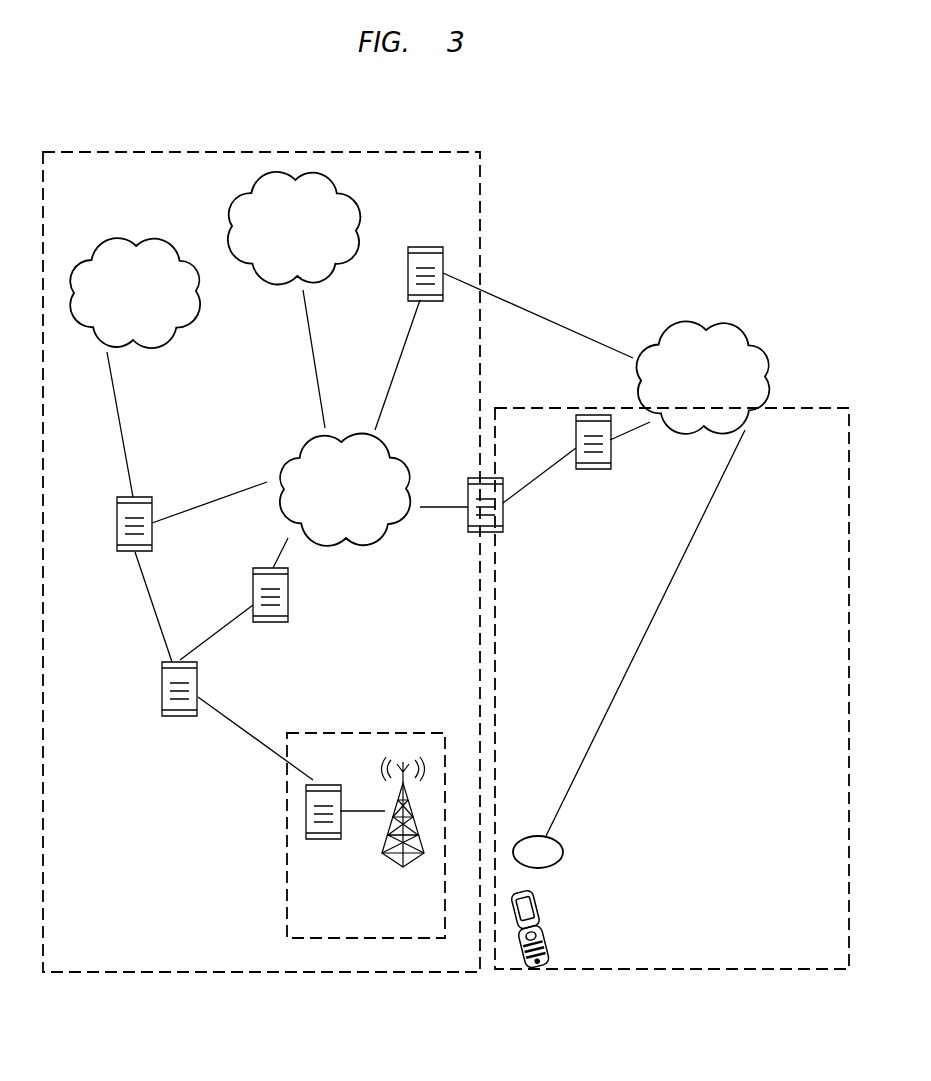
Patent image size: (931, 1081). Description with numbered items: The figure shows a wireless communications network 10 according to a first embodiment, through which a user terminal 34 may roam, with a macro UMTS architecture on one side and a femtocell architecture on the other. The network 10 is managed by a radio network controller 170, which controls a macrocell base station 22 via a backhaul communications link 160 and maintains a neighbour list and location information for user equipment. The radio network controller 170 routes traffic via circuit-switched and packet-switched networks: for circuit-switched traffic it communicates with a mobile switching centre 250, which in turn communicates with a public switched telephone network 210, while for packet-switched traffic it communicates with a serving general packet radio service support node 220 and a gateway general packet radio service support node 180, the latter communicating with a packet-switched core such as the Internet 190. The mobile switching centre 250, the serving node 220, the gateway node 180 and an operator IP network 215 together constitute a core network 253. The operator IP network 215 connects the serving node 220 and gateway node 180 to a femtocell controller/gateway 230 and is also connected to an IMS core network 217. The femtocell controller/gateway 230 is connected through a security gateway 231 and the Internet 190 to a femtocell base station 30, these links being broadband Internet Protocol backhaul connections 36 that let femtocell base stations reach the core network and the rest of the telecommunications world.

The network 10 is at (630, 247).
The macrocell base station 22 is at (285, 917).
The femtocell base station 30 is at (553, 865).
The user terminal 34 is at (548, 935).
The backhaul connection 36 is at (620, 688).
The backhaul communications link 160 is at (247, 733).
The radio network controller 170 is at (162, 712).
The gateway general packet radio service support node 180 is at (443, 296).
The Internet 190 is at (755, 418).
The public switched telephone network 210 is at (183, 345).
The operator IP network 215 is at (390, 540).
The IMS core network 217 is at (338, 275).
The serving general packet radio service support node 220 is at (272, 622).
The femtocell controller/gateway 230 is at (490, 532).
The security gateway 231 is at (593, 468).
The mobile switching centre 250 is at (117, 548).
The core network 253 is at (262, 445).